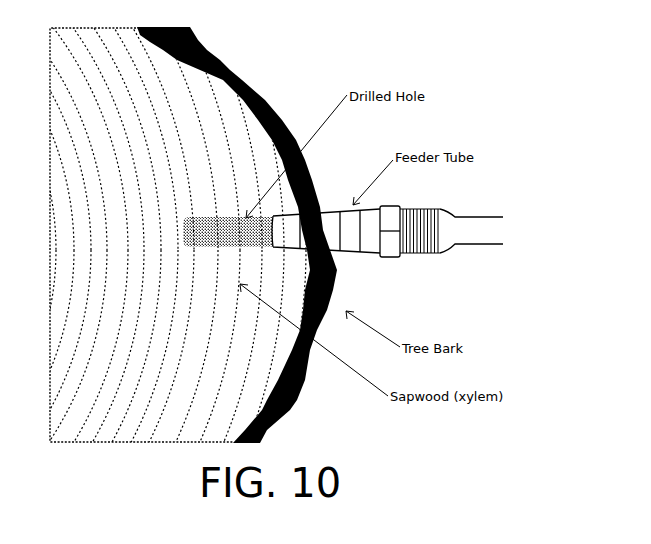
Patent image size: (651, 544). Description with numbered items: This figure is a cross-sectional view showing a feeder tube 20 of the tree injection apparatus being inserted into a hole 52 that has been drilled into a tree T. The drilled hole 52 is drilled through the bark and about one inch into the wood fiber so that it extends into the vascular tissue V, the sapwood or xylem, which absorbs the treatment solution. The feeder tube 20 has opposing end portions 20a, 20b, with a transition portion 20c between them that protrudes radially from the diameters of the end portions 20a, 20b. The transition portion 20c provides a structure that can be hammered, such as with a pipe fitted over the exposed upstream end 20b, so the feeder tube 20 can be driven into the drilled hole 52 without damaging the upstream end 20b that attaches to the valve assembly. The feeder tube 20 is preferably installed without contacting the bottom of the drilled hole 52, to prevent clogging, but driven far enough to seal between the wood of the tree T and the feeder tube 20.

The tree T is at (305, 419).
The vascular tissue V is at (204, 146).
The drilled hole 52 is at (224, 230).
The feeder tube 20 is at (426, 219).
The end portion 20a is at (338, 195).
The upstream end portion 20b is at (502, 259).
The transition portion 20c is at (394, 264).